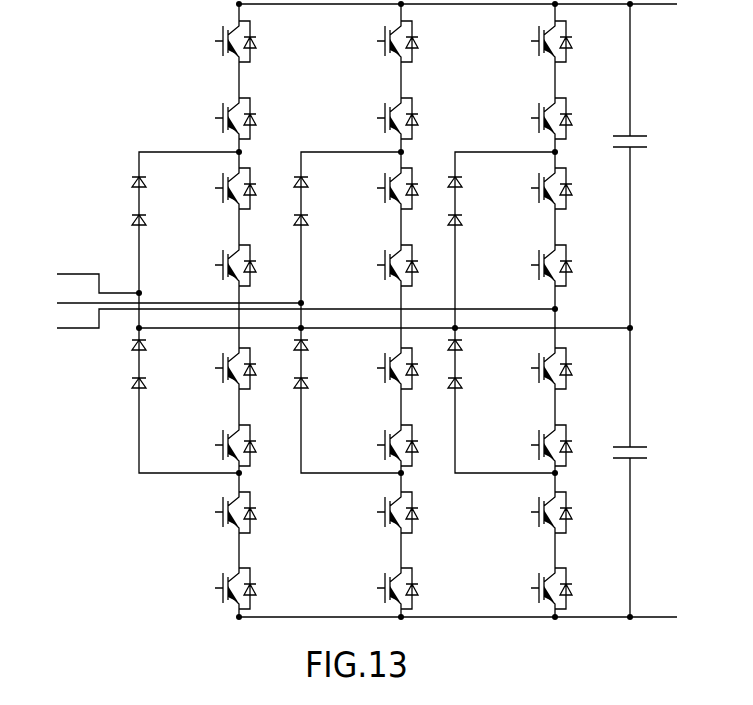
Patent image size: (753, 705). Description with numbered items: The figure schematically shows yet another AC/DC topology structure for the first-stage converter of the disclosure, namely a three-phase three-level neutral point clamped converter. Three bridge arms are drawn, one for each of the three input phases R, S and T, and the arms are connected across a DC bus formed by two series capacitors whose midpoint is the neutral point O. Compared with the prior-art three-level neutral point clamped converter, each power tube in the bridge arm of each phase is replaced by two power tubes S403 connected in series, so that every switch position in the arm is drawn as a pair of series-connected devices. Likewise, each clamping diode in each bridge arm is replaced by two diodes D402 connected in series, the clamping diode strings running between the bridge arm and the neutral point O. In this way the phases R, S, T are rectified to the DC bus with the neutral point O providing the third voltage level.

The power tube S403 is at (209, 80).
The diode D402 is at (113, 203).
The R-phase input terminal R is at (92, 282).
The S-phase input terminal S is at (173, 304).
The T-phase input terminal T is at (299, 321).
The neutral point O is at (384, 304).